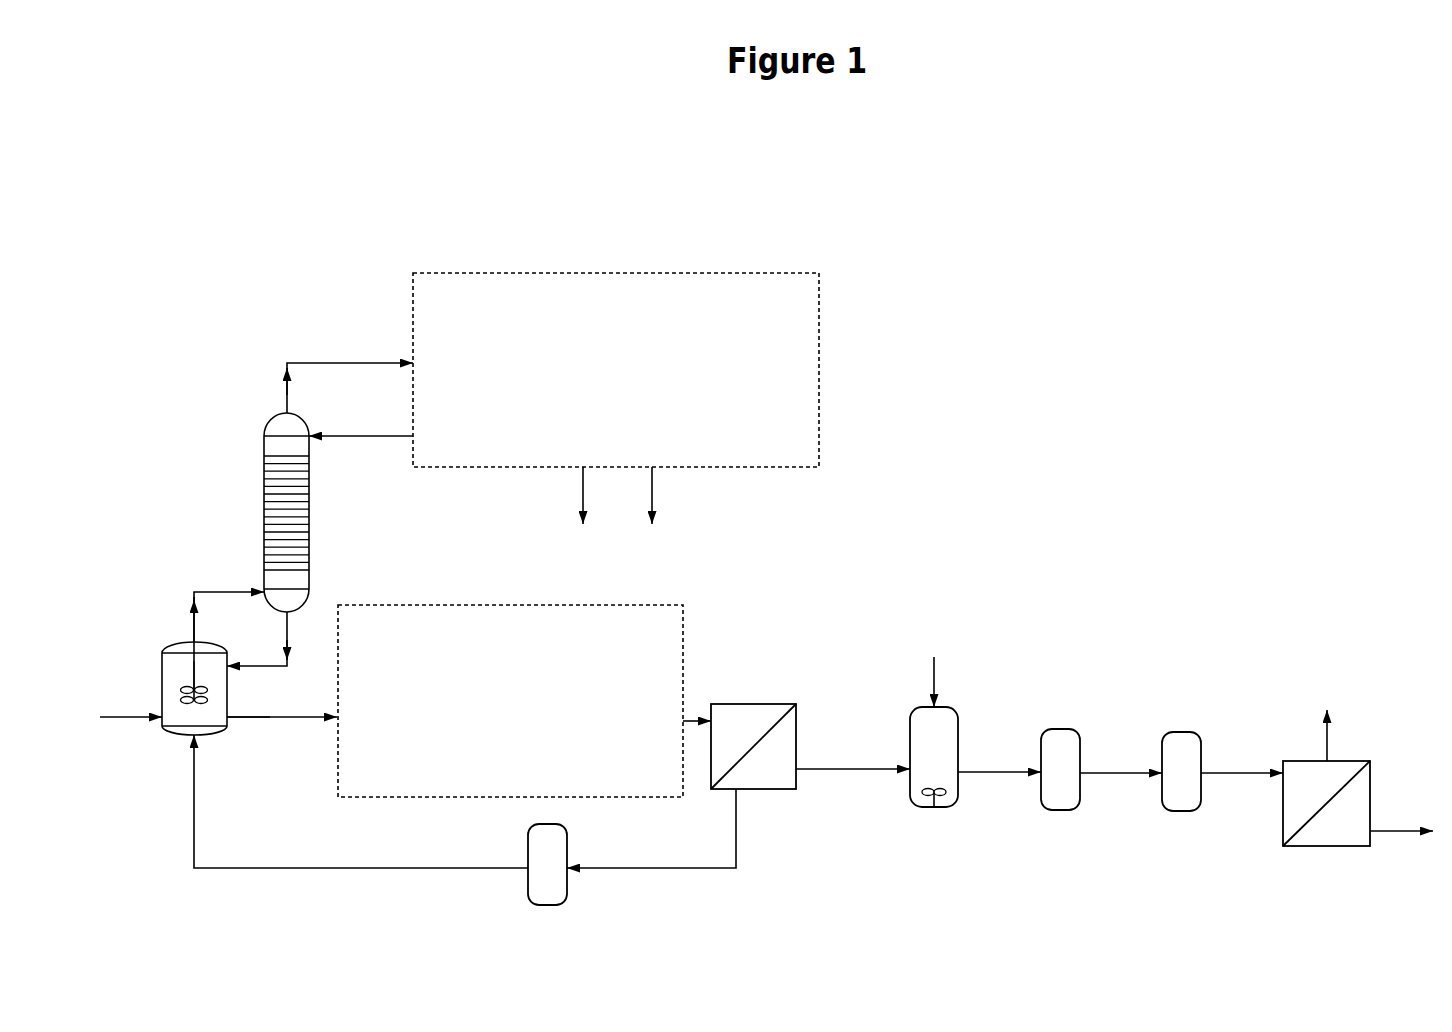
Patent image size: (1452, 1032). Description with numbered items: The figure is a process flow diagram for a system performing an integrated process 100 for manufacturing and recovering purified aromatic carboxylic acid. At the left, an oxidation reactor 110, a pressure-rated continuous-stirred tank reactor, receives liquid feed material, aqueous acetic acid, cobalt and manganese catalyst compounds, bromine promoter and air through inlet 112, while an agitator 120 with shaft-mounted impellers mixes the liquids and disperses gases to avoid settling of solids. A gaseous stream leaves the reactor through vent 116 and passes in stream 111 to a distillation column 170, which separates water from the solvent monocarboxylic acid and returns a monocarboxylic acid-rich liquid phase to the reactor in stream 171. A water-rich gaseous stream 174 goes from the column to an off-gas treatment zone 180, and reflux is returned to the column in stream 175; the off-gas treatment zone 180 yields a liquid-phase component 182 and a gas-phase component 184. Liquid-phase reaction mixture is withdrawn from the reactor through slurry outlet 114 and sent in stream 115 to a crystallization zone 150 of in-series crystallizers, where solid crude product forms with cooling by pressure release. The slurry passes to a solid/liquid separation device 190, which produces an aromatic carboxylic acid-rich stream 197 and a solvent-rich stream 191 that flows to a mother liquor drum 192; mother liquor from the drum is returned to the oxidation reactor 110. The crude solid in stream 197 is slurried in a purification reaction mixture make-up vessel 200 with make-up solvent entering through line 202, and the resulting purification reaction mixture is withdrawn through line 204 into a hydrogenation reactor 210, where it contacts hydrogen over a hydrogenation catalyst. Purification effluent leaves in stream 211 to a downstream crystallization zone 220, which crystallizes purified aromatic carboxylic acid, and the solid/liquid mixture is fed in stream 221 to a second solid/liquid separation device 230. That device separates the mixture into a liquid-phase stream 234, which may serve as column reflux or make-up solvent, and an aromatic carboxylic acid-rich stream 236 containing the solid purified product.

The process 100 is at (147, 285).
The oxidation reactor 110 is at (163, 688).
The stream 111 is at (225, 588).
The inlet 112 is at (160, 719).
The slurry outlet 114 is at (228, 720).
The stream 115 is at (270, 718).
The vent 116 is at (197, 645).
The agitator 120 is at (194, 661).
The crystallization zone 150 is at (510, 701).
The distillation column 170 is at (309, 505).
The stream 171 is at (290, 627).
The stream 174 is at (317, 362).
The stream 175 is at (347, 437).
The off-gas treatment zone 180 is at (616, 370).
The liquid-phase component 182 is at (583, 496).
The gas-phase component 184 is at (652, 496).
The solid/liquid separation device 190 is at (754, 704).
The solvent-rich stream 191 is at (660, 867).
The mother liquor drum 192 is at (528, 839).
The aromatic carboxylic acid-rich stream 197 is at (858, 770).
The purification reaction mixture make-up vessel 200 is at (908, 720).
The line 202 is at (935, 670).
The line 204 is at (1010, 773).
The hydrogenation reactor 210 is at (1040, 742).
The stream 211 is at (1130, 775).
The crystallization zone 220 is at (1162, 743).
The stream 221 is at (1252, 775).
The solid/liquid separation device 230 is at (1353, 758).
The liquid-phase stream 234 is at (1323, 745).
The aromatic carboxylic acid-rich stream 236 is at (1387, 831).